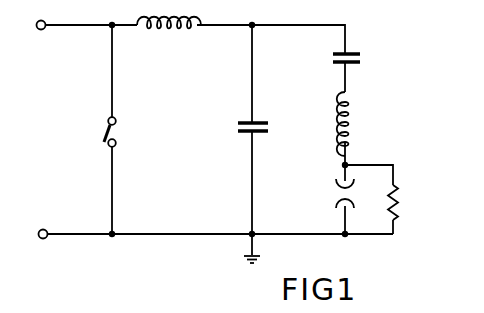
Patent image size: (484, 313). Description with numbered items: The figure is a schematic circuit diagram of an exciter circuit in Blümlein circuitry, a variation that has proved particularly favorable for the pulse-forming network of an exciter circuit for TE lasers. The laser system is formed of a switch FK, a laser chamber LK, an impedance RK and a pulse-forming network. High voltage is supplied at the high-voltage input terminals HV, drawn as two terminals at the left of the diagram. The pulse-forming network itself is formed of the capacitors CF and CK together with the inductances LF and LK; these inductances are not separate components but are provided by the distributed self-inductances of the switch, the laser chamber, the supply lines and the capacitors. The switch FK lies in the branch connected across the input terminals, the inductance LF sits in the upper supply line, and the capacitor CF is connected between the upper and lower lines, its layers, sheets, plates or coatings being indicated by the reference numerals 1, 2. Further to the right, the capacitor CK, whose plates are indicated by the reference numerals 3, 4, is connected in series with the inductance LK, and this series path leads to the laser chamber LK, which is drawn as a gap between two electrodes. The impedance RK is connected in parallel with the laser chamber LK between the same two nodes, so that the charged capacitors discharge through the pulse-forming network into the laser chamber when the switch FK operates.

The plate of capacitor CF 1 is at (259, 134).
The plate of capacitor CF 2 is at (257, 120).
The plate of capacitor CK 3 is at (350, 52).
The plate of capacitor CK 4 is at (339, 64).
The inductance LF is at (161, 28).
The capacitor CF is at (239, 129).
The switch FK is at (115, 128).
The high-voltage input terminals HV is at (44, 135).
The capacitor CK is at (361, 60).
The laser chamber LK is at (338, 194).
The impedance RK is at (399, 211).